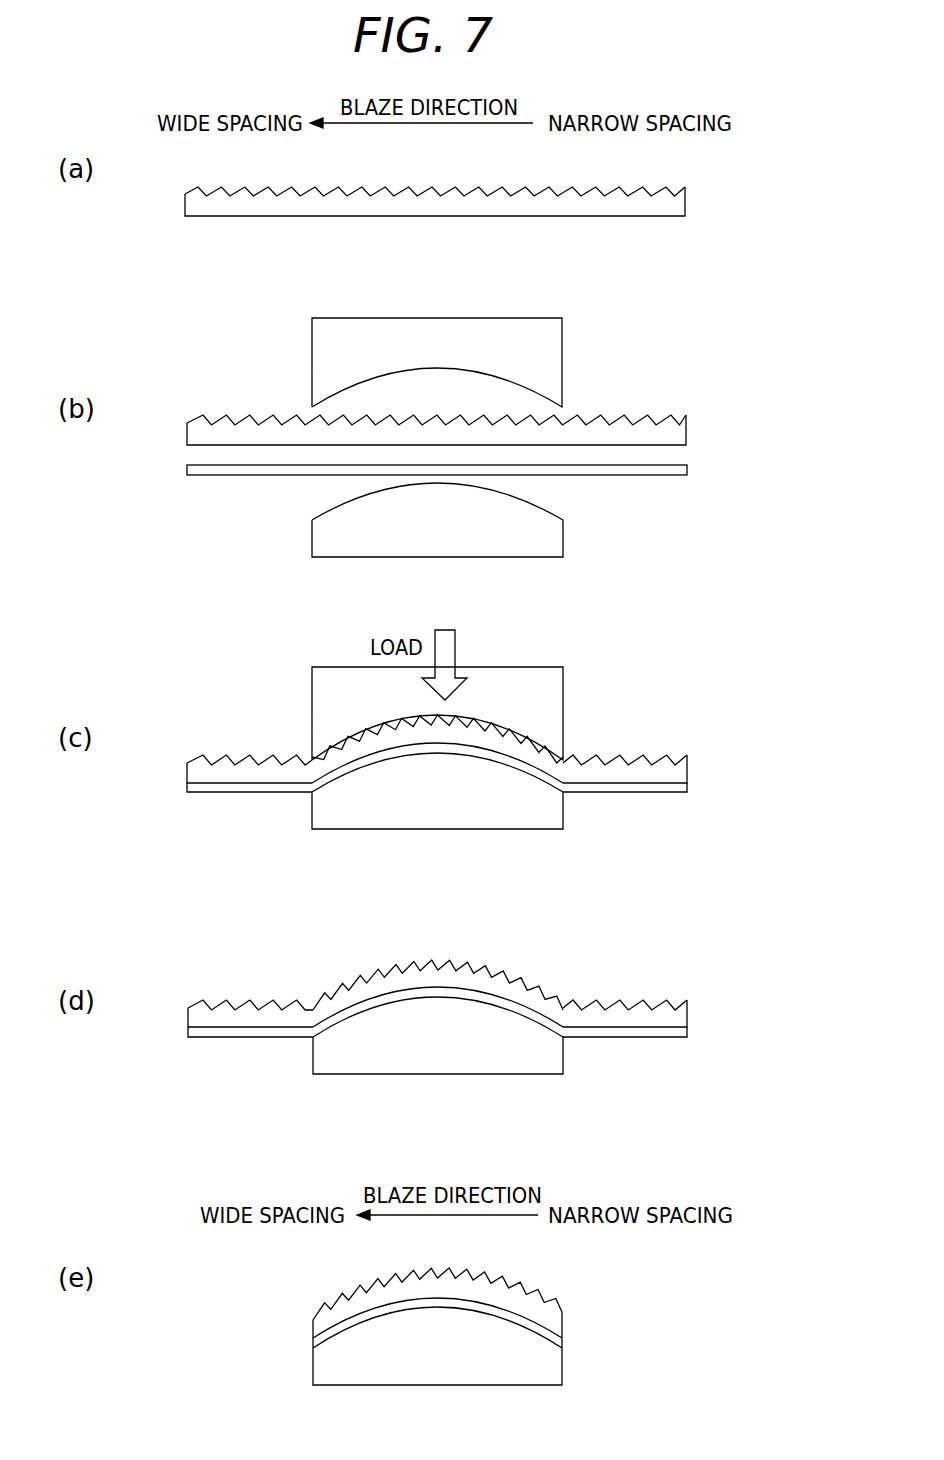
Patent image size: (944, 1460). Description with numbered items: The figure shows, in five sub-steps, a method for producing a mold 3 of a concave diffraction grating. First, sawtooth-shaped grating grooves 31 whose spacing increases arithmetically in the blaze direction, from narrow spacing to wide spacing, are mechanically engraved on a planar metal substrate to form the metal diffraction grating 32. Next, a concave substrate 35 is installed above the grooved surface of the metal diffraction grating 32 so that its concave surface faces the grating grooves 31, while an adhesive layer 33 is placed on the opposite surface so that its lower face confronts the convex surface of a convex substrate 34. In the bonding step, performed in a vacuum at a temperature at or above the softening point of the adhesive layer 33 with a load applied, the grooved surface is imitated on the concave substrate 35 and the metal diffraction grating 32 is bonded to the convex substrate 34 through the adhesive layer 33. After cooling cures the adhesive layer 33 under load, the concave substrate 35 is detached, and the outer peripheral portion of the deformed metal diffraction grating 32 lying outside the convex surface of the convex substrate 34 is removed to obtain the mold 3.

The mold of the concave diffraction grating 3 is at (295, 1344).
The grating grooves 31 is at (628, 190).
The metal diffraction grating 32 is at (658, 221).
The adhesive layer 33 is at (258, 477).
The convex substrate 34 is at (545, 535).
The concave substrate 35 is at (322, 362).